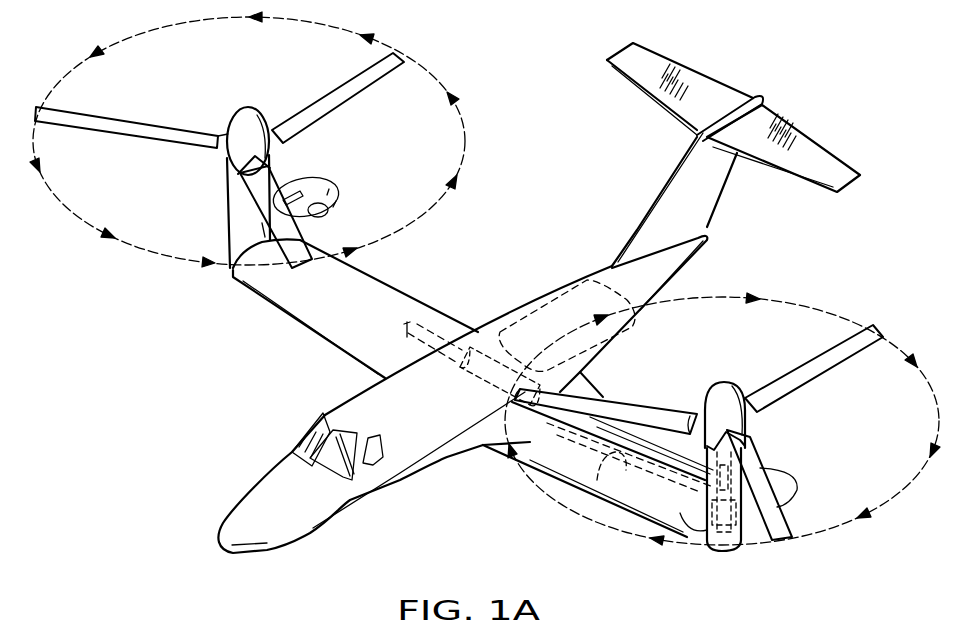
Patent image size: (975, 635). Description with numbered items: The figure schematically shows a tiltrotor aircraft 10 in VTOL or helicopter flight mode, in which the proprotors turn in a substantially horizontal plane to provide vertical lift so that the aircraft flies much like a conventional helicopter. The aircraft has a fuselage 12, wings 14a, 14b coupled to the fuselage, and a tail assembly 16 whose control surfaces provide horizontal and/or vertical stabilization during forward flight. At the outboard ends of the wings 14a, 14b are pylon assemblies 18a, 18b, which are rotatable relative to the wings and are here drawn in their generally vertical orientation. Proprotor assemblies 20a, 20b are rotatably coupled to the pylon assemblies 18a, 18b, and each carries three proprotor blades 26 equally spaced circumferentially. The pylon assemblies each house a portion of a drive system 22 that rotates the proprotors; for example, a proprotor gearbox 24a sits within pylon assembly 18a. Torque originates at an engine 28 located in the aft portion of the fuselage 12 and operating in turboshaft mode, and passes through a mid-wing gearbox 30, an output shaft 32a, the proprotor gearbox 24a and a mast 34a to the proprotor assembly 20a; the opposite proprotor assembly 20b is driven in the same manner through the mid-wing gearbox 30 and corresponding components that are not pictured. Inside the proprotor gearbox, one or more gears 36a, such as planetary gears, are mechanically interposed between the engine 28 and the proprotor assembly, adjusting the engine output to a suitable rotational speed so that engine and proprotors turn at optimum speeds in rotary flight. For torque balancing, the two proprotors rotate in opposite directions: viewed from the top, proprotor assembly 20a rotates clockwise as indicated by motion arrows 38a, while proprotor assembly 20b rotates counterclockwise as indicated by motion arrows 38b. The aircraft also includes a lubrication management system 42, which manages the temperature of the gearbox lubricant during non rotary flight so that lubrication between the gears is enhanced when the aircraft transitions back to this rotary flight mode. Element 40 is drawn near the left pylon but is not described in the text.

The tiltrotor aircraft 10 is at (838, 108).
The fuselage 12 is at (310, 513).
The wing 14a is at (492, 450).
The wing 14b is at (340, 330).
The tail assembly 16 is at (708, 92).
The pylon assembly 18a is at (722, 551).
The pylon assembly 18b is at (227, 195).
The proprotor assembly 20a is at (727, 382).
The proprotor assembly 20b is at (245, 107).
The drive system 22 is at (484, 330).
The proprotor gearbox 24a is at (750, 538).
The proprotor blades 26 is at (132, 128).
The engine 28 is at (553, 300).
The mid-wing gearbox 30 is at (472, 380).
The output shaft 32a is at (615, 472).
The mast 34a is at (738, 450).
The gears 36a is at (750, 463).
The motion arrows 38a is at (807, 307).
The motion arrows 38b is at (463, 133).
The actuator fairings 40 is at (295, 182).
The lubrication management system 42 is at (705, 455).